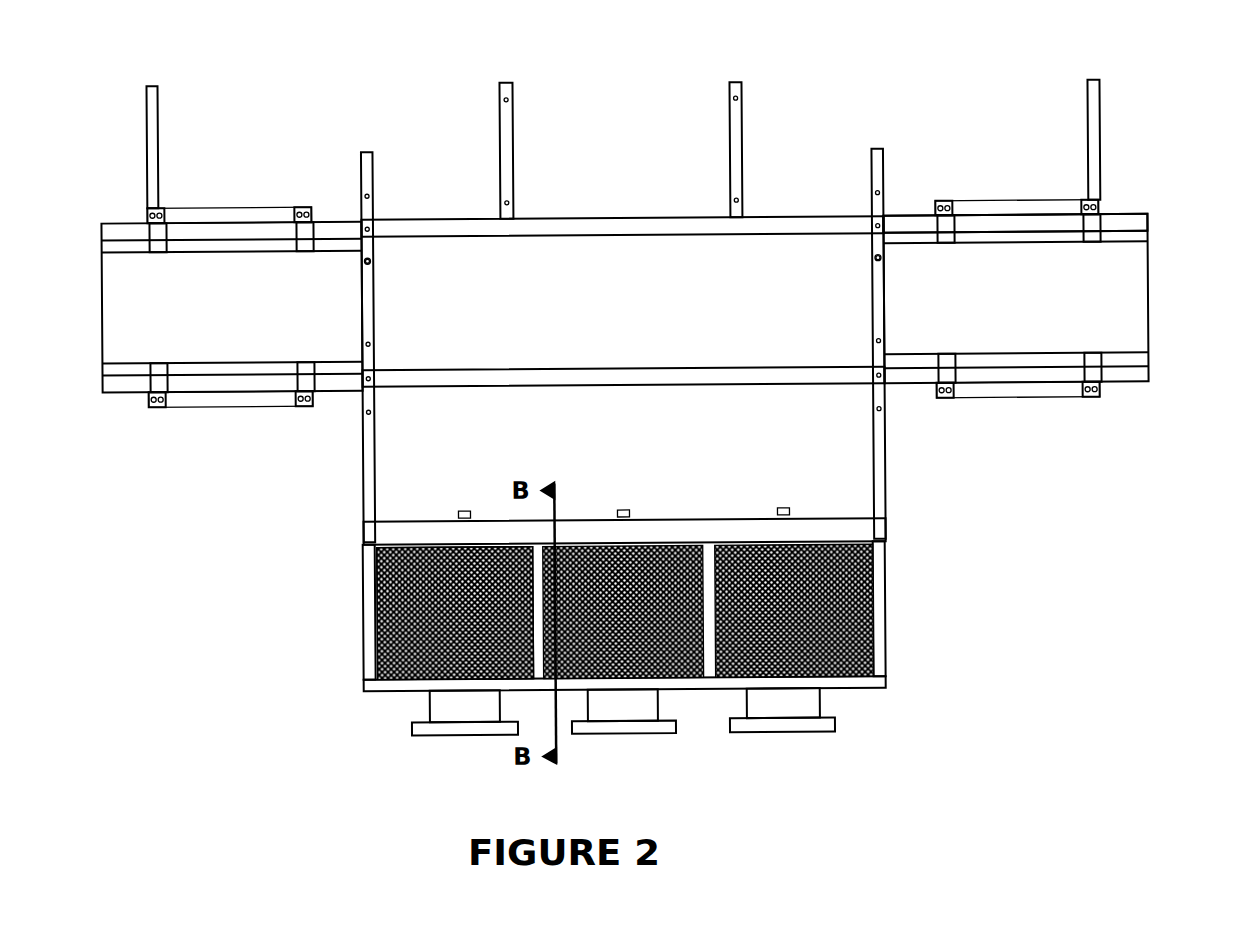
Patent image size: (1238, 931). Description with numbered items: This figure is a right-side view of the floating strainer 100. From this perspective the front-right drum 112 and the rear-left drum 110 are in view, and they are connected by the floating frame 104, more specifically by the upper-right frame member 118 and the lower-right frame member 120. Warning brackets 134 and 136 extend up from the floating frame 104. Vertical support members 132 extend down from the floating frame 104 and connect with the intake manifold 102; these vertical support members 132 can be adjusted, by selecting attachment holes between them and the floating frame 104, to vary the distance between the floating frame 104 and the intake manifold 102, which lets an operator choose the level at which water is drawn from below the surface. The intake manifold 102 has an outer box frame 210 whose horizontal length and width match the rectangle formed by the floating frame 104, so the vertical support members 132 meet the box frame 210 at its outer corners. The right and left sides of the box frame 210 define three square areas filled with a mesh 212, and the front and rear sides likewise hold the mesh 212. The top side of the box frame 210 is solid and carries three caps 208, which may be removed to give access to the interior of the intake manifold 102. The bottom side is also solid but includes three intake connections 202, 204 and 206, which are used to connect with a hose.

The floating strainer 100 is at (983, 78).
The intake manifold 102 is at (673, 610).
The floating frame 104 is at (1054, 214).
The rear-left drum 110 is at (1057, 298).
The front-right drum 112 is at (201, 307).
The upper-right frame member 118 is at (416, 344).
The lower-right frame member 120 is at (623, 352).
The vertical support members 132 is at (622, 283).
The warning bracket 134 is at (657, 131).
The warning bracket 136 is at (647, 137).
The intake connection 202 is at (465, 740).
The intake connection 204 is at (630, 739).
The intake connection 206 is at (789, 738).
The caps 208 is at (645, 484).
The box frame 210 is at (660, 605).
The mesh 212 is at (408, 614).